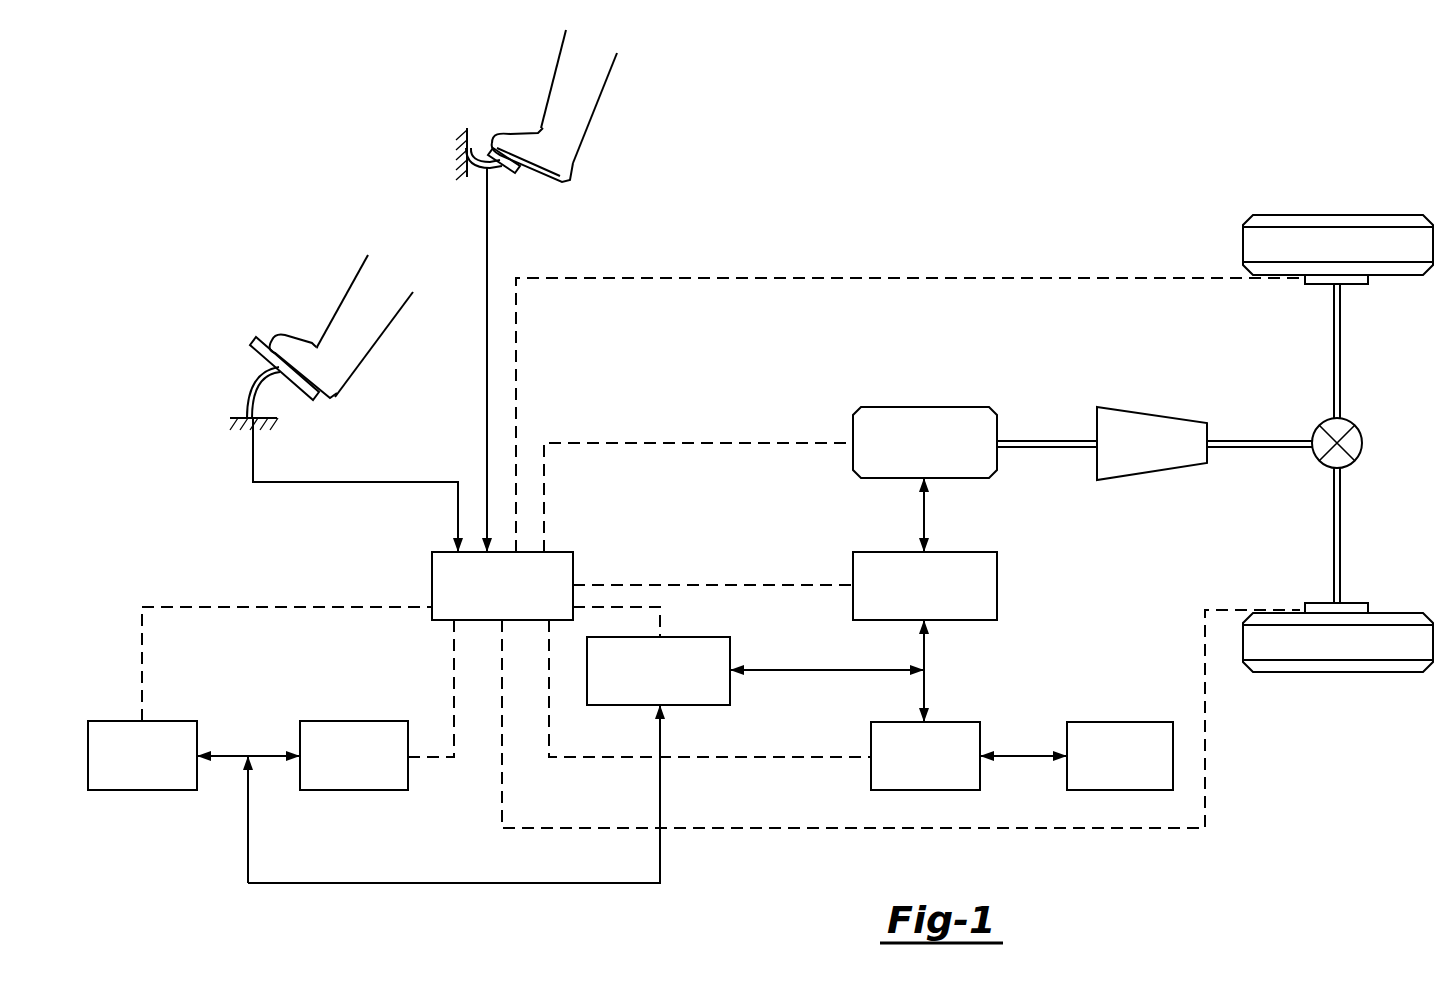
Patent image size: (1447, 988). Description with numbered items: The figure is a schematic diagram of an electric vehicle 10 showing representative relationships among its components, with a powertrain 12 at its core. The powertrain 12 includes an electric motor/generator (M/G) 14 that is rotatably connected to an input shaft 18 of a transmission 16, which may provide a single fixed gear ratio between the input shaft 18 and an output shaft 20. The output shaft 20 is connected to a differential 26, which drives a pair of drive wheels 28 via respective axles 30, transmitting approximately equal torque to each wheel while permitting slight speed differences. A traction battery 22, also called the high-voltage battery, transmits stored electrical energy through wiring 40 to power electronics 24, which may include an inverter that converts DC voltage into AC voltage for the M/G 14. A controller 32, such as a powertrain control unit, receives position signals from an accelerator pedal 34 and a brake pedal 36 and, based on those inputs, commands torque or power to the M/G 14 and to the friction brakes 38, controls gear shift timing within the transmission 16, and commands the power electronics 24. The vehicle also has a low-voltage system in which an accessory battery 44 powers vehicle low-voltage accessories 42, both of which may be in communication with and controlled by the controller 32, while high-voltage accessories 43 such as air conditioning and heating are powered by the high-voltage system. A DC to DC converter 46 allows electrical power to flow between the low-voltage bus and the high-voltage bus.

The electric vehicle 10 is at (1226, 140).
The powertrain 12 is at (814, 363).
The electric motor/generator (M/G) 14 is at (924, 406).
The transmission 16 is at (1150, 481).
The input shaft 18 is at (1048, 440).
The output shaft 20 is at (1275, 440).
The traction battery 22 is at (871, 737).
The power electronics 24 is at (997, 588).
The differential 26 is at (1362, 443).
The drive wheels 28 is at (1342, 214).
The axles 30 is at (1341, 347).
The controller 32 is at (430, 587).
The accelerator pedal 34 is at (305, 296).
The brake pedal 36 is at (511, 86).
The friction brakes 38 is at (1368, 279).
The wiring 40 is at (924, 655).
The vehicle low-voltage accessories 42 is at (165, 721).
The high-voltage accessories 43 is at (1118, 722).
The accessory battery 44 is at (355, 721).
The DC to DC converter 46 is at (700, 637).